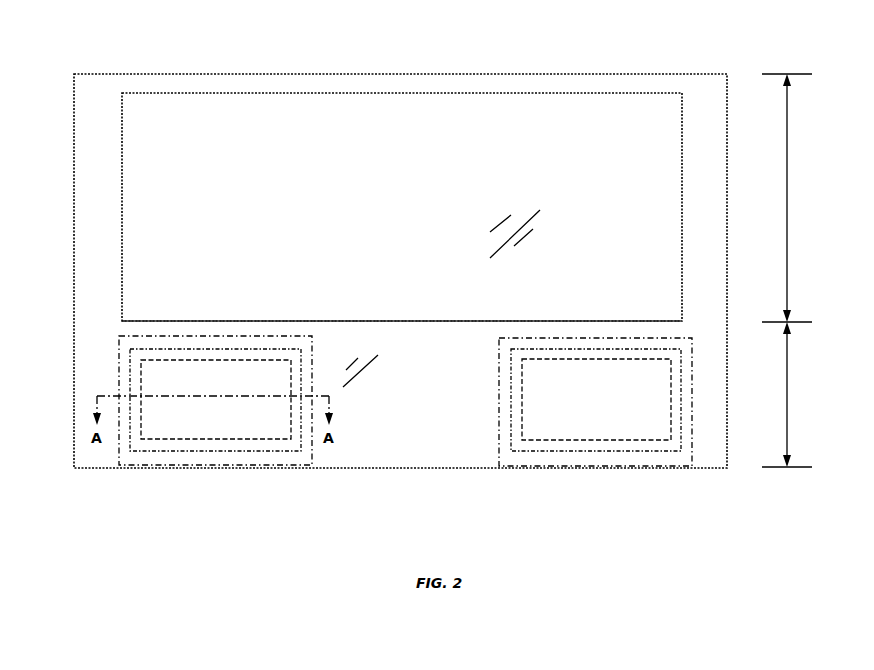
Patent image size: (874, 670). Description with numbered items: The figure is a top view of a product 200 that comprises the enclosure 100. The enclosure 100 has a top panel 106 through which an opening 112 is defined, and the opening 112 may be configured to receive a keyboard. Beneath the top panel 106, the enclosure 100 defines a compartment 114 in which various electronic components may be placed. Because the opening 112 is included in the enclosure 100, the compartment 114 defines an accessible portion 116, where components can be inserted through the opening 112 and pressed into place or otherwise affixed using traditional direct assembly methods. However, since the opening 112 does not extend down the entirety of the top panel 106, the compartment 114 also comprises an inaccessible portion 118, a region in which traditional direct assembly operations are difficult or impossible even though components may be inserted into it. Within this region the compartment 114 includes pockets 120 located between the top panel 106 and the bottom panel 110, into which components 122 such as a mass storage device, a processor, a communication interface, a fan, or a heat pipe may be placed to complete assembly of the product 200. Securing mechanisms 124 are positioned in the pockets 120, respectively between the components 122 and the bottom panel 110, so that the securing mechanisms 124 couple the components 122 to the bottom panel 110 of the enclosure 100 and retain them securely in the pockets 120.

The product 200 is at (142, 37).
The enclosure 100 is at (497, 73).
The bottom panel 110 is at (402, 207).
The opening 112 is at (385, 321).
The compartment 114 is at (258, 197).
The top panel 106 is at (386, 371).
The accessible portion 116 is at (787, 188).
The inaccessible portion 118 is at (787, 396).
The pockets 120 is at (157, 336).
The components 122 is at (270, 360).
The securing mechanisms 124 is at (214, 349).